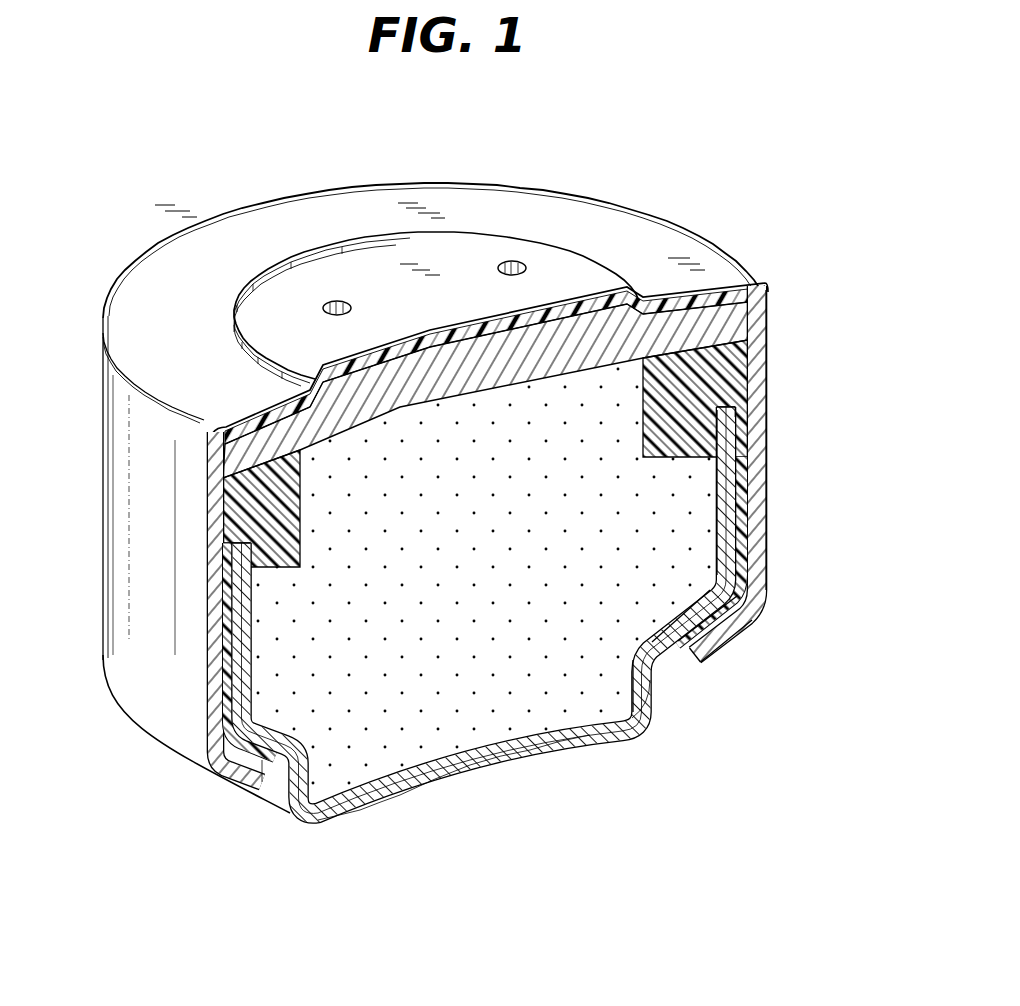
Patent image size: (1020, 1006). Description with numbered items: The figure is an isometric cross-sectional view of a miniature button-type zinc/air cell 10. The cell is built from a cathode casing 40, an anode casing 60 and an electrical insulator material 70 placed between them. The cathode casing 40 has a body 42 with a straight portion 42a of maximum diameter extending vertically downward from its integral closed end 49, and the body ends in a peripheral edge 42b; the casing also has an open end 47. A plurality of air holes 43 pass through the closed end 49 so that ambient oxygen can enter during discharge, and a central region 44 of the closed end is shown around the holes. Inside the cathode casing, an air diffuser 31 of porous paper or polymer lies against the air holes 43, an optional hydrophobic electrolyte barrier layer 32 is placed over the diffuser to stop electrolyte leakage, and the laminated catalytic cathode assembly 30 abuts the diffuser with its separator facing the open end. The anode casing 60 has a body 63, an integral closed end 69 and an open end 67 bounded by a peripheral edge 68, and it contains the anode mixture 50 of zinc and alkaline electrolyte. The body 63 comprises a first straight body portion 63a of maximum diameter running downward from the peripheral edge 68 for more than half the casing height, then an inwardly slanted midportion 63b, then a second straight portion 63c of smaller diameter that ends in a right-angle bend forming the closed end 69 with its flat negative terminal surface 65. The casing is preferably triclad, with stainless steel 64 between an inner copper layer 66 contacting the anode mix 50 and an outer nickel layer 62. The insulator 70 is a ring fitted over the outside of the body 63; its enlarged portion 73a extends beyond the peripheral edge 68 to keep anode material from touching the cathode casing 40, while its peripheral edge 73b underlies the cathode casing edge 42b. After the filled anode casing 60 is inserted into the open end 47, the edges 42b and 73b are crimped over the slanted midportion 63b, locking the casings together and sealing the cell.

The zinc/air cell 10 is at (212, 182).
The catalytic cathode assembly 30 is at (745, 323).
The air diffuser 31 is at (768, 290).
The electrolyte barrier layer 32 is at (758, 302).
The cathode casing 40 is at (655, 225).
The body 42 is at (763, 440).
The straight portion 42a is at (765, 555).
The peripheral edge 42b is at (732, 633).
The air holes 43 is at (337, 300).
The central raised portion 44 is at (455, 253).
The open end 47 is at (266, 774).
The closed end 49 is at (170, 250).
The anode mixture 50 is at (567, 697).
The anode casing 60 is at (648, 730).
The nickel layer 62 is at (548, 753).
The body 63 is at (238, 622).
The first straight body portion 63a is at (733, 518).
The slanted midportion 63b is at (663, 657).
The second straight portion 63c is at (653, 690).
The stainless steel 64 is at (497, 753).
The negative terminal surface 65 is at (423, 783).
The copper layer 66 is at (343, 793).
The open end 67 is at (233, 533).
The peripheral edge 68 is at (734, 423).
The closed end 69 is at (380, 800).
The electrical insulator material 70 is at (743, 478).
The enlarged portion 73a is at (715, 367).
The peripheral edge 73b is at (732, 618).